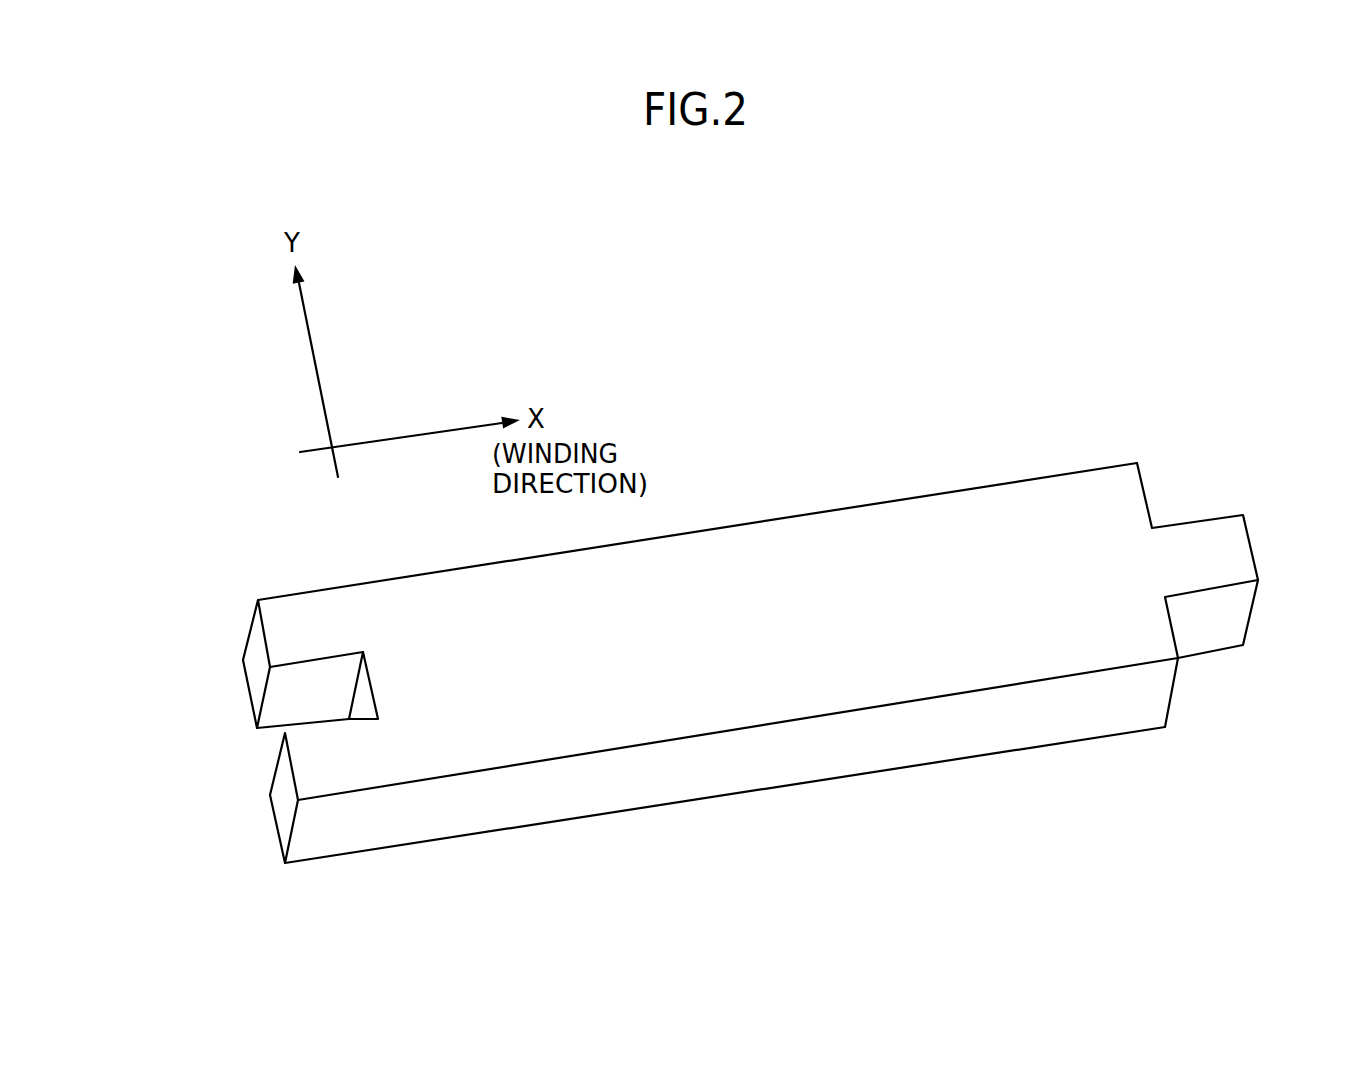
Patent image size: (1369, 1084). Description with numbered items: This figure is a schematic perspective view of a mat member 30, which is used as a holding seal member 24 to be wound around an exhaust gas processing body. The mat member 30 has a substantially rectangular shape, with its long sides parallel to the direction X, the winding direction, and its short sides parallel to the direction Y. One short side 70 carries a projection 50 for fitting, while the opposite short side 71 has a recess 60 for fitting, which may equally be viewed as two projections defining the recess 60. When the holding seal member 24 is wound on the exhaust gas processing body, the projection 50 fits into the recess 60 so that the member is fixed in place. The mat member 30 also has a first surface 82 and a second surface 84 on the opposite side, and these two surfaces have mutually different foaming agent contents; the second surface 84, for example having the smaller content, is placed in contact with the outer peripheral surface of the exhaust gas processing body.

The mat member 30 is at (706, 633).
The holding seal member 24 is at (706, 633).
The first surface 82 is at (1078, 495).
The second surface 84 is at (1080, 742).
The projection 50 is at (1197, 570).
The short side 70 is at (1249, 570).
The short side 71 is at (214, 741).
The recess 60 is at (265, 702).